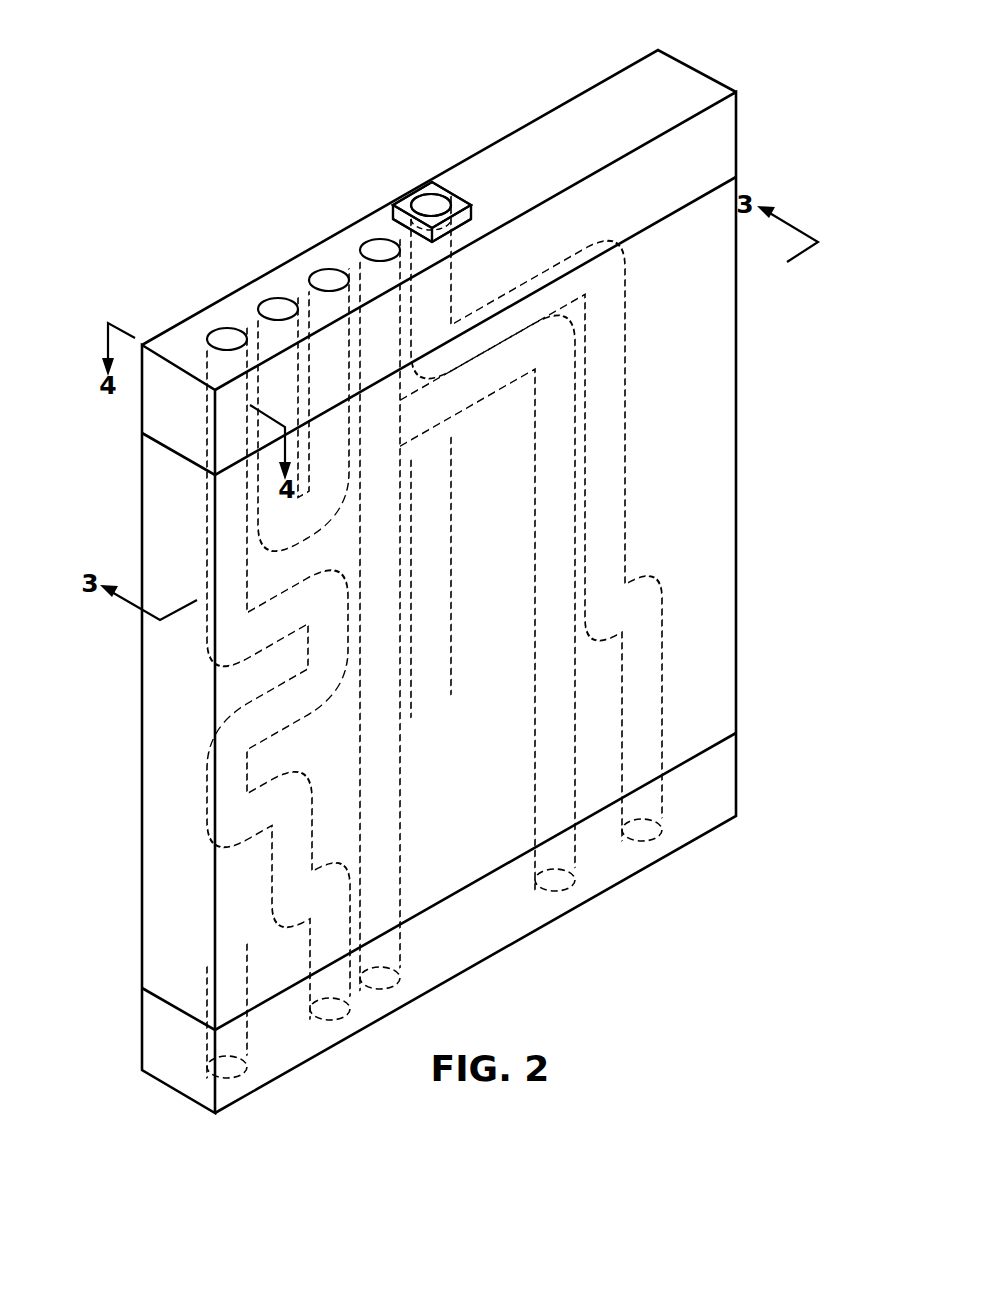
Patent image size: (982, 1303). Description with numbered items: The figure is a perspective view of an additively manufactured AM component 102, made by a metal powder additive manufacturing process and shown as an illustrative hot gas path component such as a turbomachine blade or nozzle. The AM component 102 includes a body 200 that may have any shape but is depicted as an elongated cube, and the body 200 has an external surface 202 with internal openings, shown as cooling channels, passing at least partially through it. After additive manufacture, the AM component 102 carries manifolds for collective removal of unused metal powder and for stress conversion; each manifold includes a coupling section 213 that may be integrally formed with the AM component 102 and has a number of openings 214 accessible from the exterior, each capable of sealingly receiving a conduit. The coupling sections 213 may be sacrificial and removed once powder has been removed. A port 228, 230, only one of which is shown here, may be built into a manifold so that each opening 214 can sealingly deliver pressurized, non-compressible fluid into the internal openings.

The AM component 102 is at (540, 88).
The body 200 is at (196, 827).
The external surface 202 is at (142, 705).
The coupling section 213 is at (722, 133).
The openings 214 is at (228, 337).
The port 228 is at (457, 200).
The port 230 is at (432, 212).